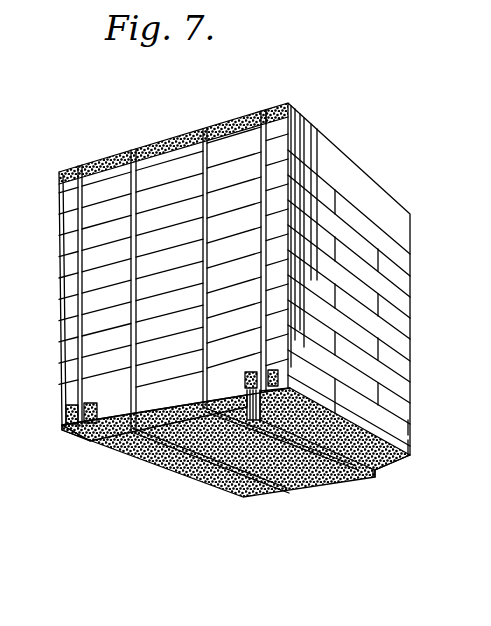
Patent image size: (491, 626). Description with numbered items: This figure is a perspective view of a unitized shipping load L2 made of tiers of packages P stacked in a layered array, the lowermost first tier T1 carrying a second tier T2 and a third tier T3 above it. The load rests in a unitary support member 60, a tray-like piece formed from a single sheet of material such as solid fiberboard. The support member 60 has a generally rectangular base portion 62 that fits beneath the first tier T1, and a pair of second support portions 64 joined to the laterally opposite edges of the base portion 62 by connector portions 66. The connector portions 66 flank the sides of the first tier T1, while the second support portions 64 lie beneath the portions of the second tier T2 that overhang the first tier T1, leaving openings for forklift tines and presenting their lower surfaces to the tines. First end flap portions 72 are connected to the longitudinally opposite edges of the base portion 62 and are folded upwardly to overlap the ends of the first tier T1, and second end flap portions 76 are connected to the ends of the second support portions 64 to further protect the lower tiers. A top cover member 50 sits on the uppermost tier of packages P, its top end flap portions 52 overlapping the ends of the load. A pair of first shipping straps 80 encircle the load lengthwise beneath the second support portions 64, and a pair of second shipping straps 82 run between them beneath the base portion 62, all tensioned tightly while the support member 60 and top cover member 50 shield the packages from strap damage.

The top cover member 50 is at (226, 120).
The top end flap portions 52 is at (272, 107).
The first shipping straps 80 is at (58, 172).
The second shipping straps 82 is at (203, 163).
The unitized shipping load L2 is at (362, 160).
The packages P is at (227, 225).
The second end flap portions 76 is at (70, 410).
The first end flap portions 72 is at (147, 418).
The second support portions 64 is at (80, 440).
The support member 60 is at (157, 468).
The base portion 62 is at (222, 458).
The connector portions 66 is at (350, 457).
The first tier T1 is at (383, 471).
The second tier T2 is at (416, 443).
The third tier T3 is at (416, 423).